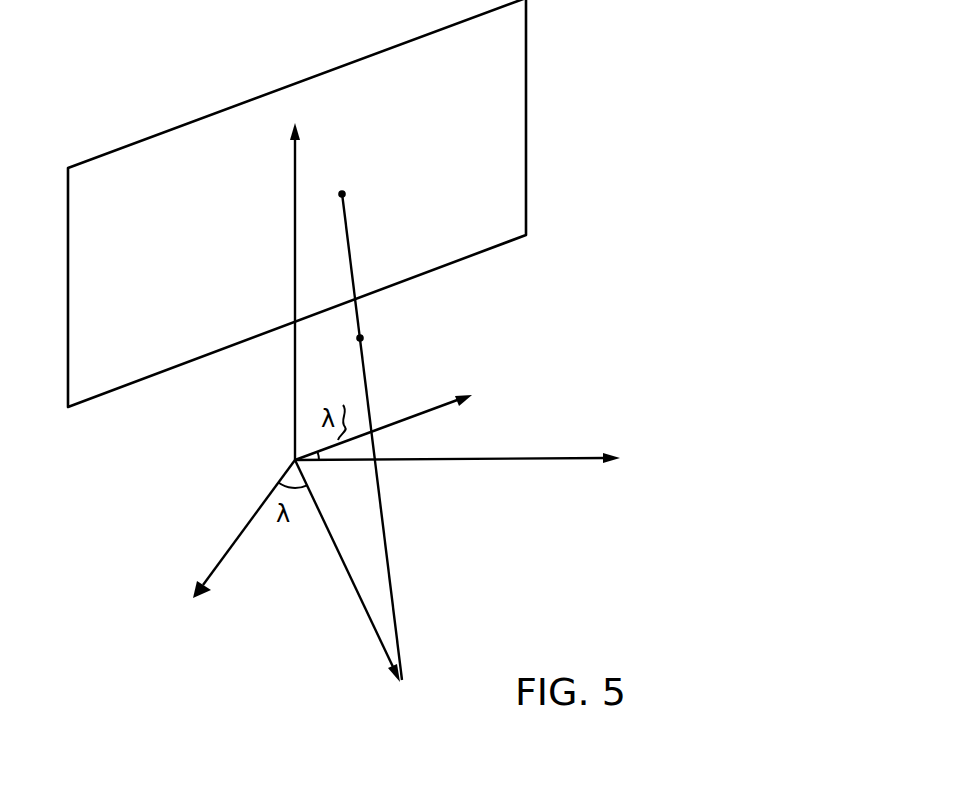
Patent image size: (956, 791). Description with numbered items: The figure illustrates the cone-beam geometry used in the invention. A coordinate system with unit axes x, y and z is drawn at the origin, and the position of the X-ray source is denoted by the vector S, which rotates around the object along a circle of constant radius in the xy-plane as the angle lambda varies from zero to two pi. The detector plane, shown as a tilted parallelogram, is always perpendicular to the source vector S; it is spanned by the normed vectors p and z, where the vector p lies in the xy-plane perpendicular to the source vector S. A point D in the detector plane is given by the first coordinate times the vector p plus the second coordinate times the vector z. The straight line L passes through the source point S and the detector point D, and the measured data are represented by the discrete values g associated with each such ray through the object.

The z unit vector z is at (304, 282).
The y axis y is at (463, 475).
The x axis x is at (233, 530).
The unit vector p(λ) p is at (411, 421).
The X-ray source position vector S(λ) S is at (430, 660).
The straight line L(λ,p,q) L is at (416, 436).
The measured data g(λ,p,q) g is at (395, 180).
The detector plane point D(p,q) D is at (394, 320).